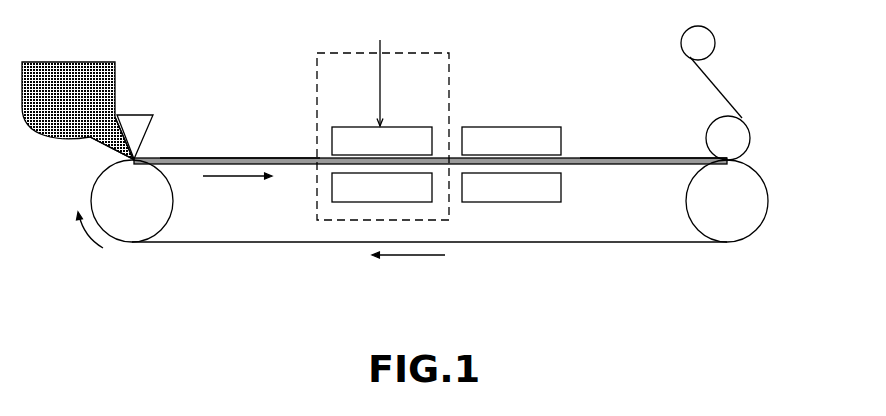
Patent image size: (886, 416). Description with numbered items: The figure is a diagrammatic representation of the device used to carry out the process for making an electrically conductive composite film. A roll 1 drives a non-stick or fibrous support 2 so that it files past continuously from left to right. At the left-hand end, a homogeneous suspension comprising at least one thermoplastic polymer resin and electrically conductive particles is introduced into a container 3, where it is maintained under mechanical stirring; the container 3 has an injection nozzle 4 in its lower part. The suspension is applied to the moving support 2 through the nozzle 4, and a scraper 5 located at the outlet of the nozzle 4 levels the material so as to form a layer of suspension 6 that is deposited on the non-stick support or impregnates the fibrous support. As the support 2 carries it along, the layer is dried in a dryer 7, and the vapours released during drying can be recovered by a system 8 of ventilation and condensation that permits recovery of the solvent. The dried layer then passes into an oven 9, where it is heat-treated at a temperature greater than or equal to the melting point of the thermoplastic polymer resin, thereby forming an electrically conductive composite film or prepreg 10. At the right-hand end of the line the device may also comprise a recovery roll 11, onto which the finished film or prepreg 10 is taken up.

The roll 1 is at (768, 200).
The non-stick or fibrous support 2 is at (278, 245).
The container 3 is at (77, 110).
The injection nozzle 4 is at (108, 150).
The scraper 5 is at (150, 113).
The layer of suspension 6 is at (222, 157).
The dryer 7 is at (380, 69).
The system of ventilation and condensation 8 is at (450, 55).
The oven 9 is at (512, 125).
The electrically conductive composite film or prepreg 10 is at (598, 158).
The recovery roll 11 is at (722, 97).